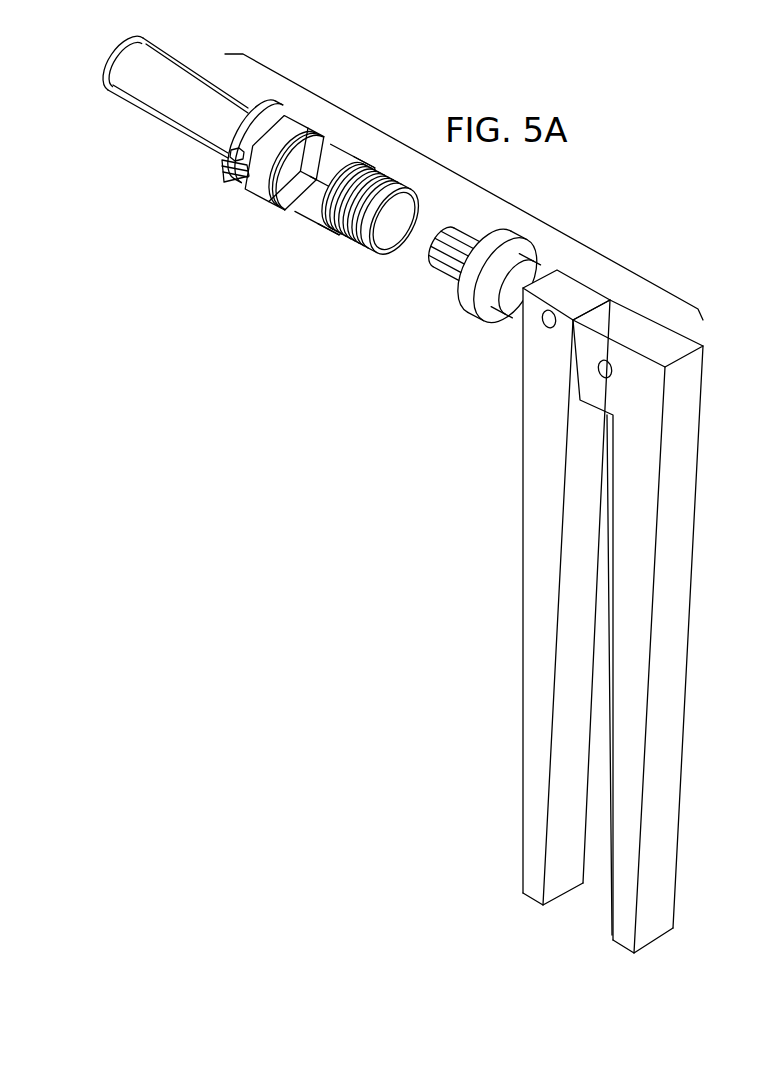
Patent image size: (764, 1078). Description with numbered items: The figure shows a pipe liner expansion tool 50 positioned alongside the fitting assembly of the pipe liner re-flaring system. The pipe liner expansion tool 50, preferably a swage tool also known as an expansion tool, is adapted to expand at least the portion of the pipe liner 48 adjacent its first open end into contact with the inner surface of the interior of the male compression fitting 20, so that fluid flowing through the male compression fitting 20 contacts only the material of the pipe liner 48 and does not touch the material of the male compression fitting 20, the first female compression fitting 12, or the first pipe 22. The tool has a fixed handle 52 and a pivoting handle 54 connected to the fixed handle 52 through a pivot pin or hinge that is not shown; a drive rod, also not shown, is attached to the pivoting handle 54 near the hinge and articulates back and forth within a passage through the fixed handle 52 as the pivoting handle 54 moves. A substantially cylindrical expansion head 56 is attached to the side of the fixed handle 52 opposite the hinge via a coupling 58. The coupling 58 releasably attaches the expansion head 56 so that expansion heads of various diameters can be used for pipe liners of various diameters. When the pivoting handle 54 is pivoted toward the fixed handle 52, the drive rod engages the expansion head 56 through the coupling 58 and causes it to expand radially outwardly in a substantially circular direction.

The first female compression fitting 12 is at (257, 185).
The male compression fitting 20 is at (308, 205).
The first pipe 22 is at (165, 93).
The pipe liner 48 is at (367, 232).
The pipe liner expansion tool 50 is at (494, 503).
The fixed handle 52 is at (535, 608).
The pivoting handle 54 is at (667, 655).
The expansion head 56 is at (445, 263).
The coupling 58 is at (488, 323).